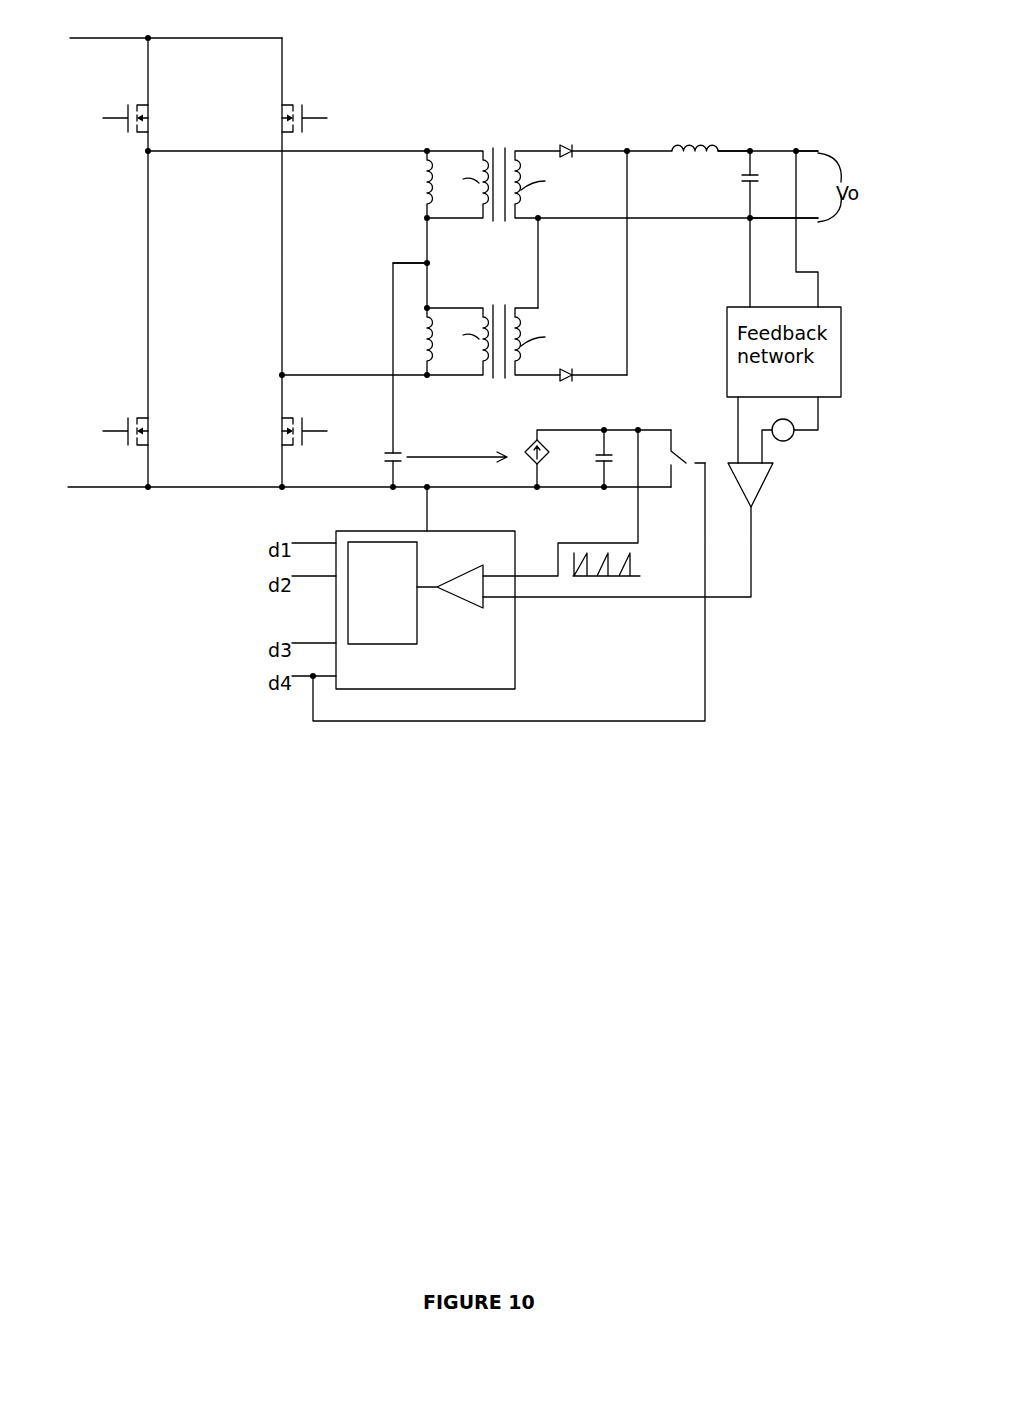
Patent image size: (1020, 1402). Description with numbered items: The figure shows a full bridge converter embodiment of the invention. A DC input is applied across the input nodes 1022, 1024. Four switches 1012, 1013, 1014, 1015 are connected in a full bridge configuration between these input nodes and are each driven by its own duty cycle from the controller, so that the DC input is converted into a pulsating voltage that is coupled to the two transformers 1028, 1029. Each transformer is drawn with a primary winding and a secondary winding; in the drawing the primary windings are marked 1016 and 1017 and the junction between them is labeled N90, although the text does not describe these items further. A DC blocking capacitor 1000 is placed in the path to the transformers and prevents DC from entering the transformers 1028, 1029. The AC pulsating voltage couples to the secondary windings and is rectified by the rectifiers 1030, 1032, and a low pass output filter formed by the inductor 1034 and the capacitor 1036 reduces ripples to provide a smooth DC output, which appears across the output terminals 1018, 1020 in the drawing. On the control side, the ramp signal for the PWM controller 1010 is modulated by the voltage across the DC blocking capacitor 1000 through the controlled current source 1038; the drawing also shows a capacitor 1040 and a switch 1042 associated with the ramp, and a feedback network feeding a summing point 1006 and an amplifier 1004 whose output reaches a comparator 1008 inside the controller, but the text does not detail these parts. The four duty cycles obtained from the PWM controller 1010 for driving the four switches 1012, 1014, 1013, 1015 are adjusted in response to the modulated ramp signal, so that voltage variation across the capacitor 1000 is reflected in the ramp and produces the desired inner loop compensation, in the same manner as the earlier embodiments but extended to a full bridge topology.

The input node 1022 is at (95, 36).
The input node 1024 is at (133, 493).
The switch 1012 is at (182, 104).
The switch 1013 is at (278, 117).
The switch 1014 is at (183, 416).
The switch 1015 is at (278, 430).
The primary winding of first transformer 1016 is at (423, 189).
The primary winding of second transformer 1017 is at (423, 350).
The transformer 1028 is at (477, 182).
The transformer 1029 is at (491, 345).
The rectifier 1030 is at (575, 142).
The rectifier 1032 is at (572, 381).
The inductor 1034 is at (695, 141).
The capacitor 1036 is at (748, 190).
The output terminal 1018 is at (783, 151).
The output return terminal 1020 is at (749, 236).
The node N90 is at (387, 296).
The DC blocking capacitor 1000 is at (383, 453).
The controlled current source 1038 is at (533, 445).
The capacitor 1040 is at (593, 455).
The switch 1042 is at (708, 442).
The summing junction 1006 is at (789, 446).
The error amplifier 1004 is at (759, 498).
The comparator 1008 is at (478, 561).
The PWM controller 1010 is at (425, 610).